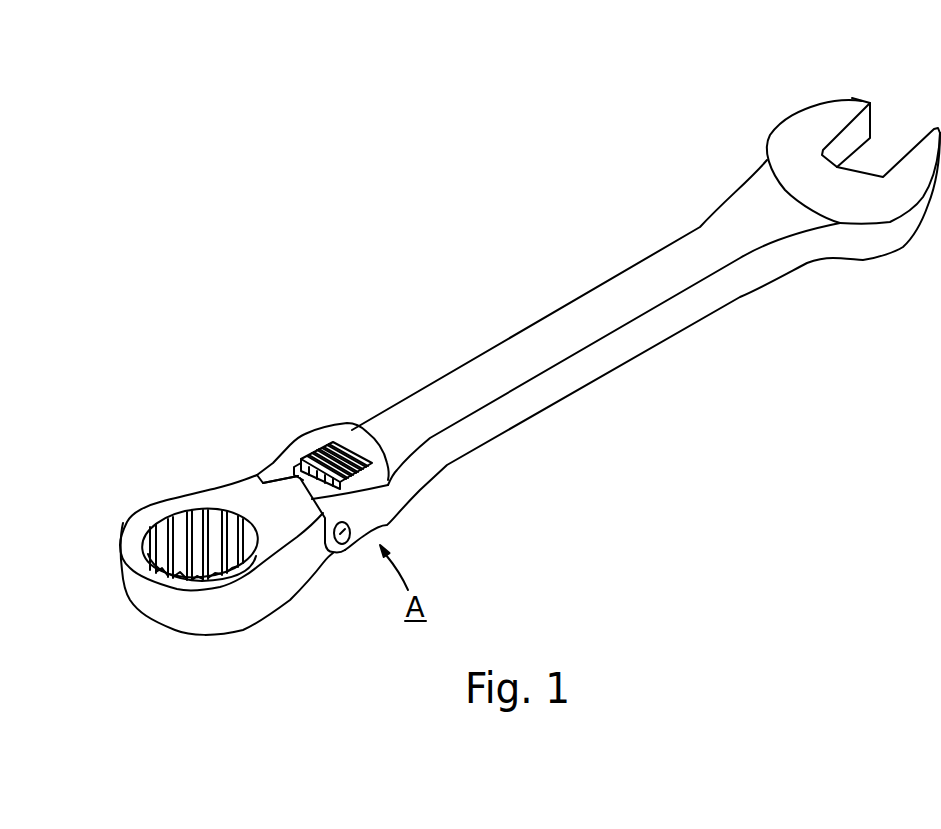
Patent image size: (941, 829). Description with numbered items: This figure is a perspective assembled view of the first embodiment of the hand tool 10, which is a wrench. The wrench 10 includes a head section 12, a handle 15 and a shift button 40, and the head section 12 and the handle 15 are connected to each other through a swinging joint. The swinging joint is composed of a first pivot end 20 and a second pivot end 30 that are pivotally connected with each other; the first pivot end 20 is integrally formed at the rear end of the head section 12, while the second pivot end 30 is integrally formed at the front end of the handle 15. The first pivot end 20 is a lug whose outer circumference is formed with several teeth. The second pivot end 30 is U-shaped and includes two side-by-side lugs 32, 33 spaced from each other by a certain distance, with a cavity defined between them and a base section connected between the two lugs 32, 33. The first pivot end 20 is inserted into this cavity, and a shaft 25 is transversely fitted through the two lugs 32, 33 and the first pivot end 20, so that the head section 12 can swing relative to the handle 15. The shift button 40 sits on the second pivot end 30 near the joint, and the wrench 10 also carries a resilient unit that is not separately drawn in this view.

The hand tool 10 is at (418, 203).
The head section 12 is at (213, 617).
The handle 15 is at (702, 300).
The first pivot end 20 is at (286, 491).
The shaft 25 is at (343, 541).
The second pivot end 30 is at (316, 494).
The lug 32 is at (258, 473).
The lug 33 is at (376, 518).
The shift button 40 is at (321, 441).